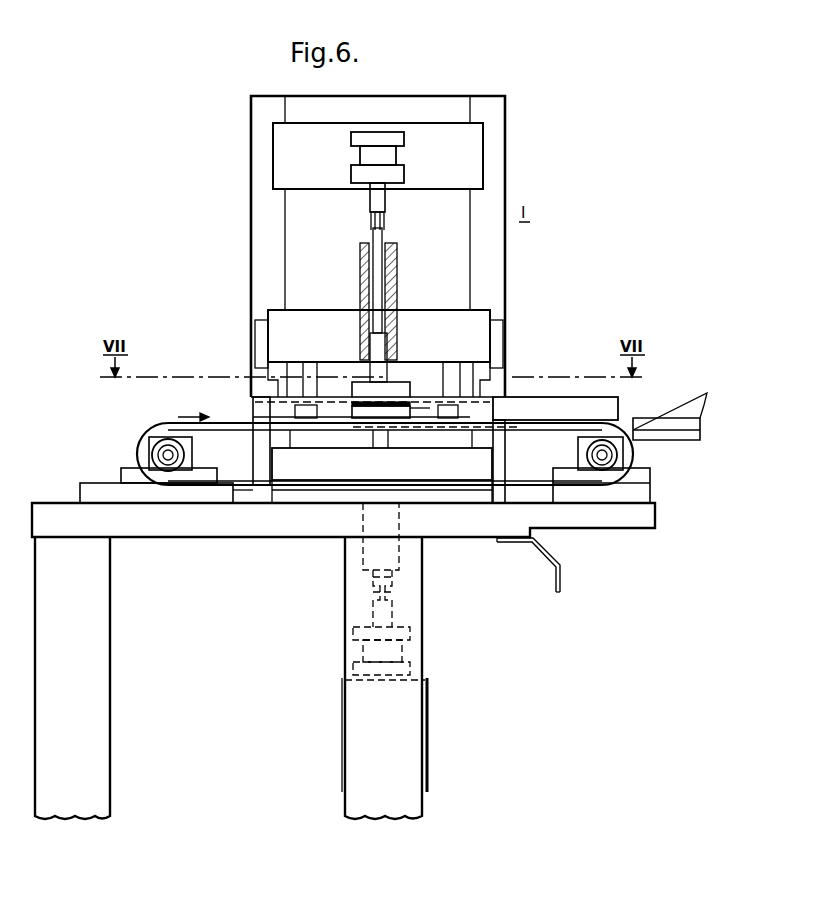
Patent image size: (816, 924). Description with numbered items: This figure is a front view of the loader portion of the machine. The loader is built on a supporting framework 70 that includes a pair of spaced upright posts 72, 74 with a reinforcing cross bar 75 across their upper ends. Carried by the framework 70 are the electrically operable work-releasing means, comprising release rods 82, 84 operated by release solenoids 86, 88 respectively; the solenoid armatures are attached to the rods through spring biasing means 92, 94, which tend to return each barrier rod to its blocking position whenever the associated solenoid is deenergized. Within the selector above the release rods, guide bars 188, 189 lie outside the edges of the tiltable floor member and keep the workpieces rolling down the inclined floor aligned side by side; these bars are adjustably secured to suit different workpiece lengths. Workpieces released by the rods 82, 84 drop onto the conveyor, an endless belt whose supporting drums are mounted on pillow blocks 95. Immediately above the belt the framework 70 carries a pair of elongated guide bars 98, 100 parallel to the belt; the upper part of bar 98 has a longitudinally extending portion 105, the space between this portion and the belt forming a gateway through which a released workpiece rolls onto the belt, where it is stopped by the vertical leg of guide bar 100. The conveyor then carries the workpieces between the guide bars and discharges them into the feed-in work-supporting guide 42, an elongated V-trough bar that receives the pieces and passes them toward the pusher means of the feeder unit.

The feed-in work-supporting guide 42 is at (672, 441).
The supporting framework 70 is at (110, 558).
The upright post 72 is at (252, 239).
The upright post 74 is at (503, 241).
The reinforcing cross bar 75 is at (430, 181).
The release rod 82 is at (404, 389).
The release rod 84 is at (420, 412).
The release solenoid 86 is at (360, 155).
The release solenoid 88 is at (363, 650).
The spring biasing means 92 is at (360, 272).
The spring biasing means 94 is at (394, 465).
The pillow blocks 95 is at (185, 456).
The guide bar 98 is at (478, 397).
The guide bar 100 is at (258, 410).
The longitudinally extending portion 105 is at (327, 390).
The guide bar 188 is at (318, 375).
The guide bar 189 is at (444, 375).